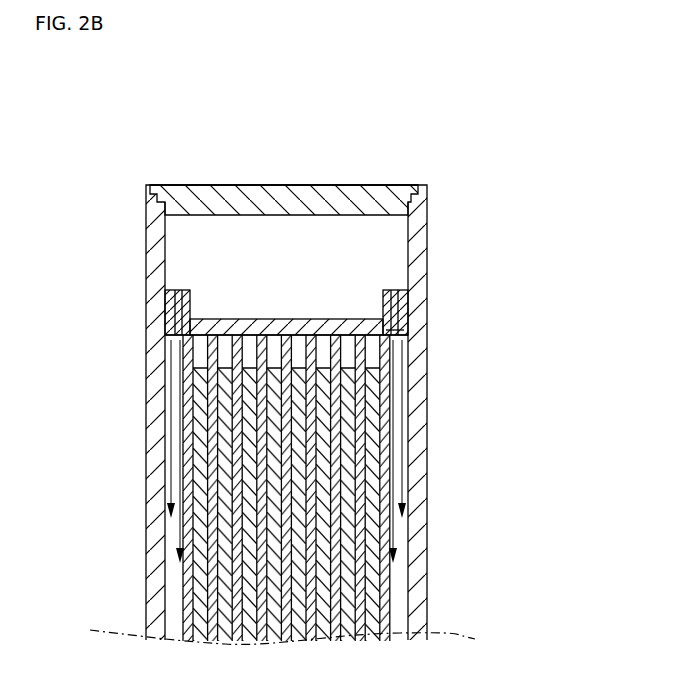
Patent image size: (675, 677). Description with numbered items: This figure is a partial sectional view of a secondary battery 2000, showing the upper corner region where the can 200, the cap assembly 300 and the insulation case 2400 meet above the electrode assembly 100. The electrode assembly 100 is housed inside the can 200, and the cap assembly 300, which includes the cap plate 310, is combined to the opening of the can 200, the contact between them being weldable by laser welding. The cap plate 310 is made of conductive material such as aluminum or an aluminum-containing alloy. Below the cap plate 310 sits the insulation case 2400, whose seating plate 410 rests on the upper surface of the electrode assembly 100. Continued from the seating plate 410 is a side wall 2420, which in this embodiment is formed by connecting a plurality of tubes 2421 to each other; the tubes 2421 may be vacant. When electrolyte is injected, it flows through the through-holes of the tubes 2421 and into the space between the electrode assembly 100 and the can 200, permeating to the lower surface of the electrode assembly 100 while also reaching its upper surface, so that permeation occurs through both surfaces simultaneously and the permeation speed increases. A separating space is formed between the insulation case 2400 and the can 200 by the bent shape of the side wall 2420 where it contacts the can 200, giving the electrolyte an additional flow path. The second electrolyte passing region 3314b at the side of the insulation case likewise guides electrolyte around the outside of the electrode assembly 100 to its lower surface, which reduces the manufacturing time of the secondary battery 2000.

The secondary battery 2000 is at (110, 137).
The cap assembly 300 is at (363, 186).
The cap plate 310 is at (279, 195).
The seating plate 410 is at (282, 321).
The insulation case 2400 is at (337, 287).
The side wall 2420 is at (409, 294).
The tube 2421 is at (392, 291).
The second electrolyte passing region 3314b is at (392, 331).
The can 200 is at (422, 404).
The electrode assembly 100 is at (392, 470).